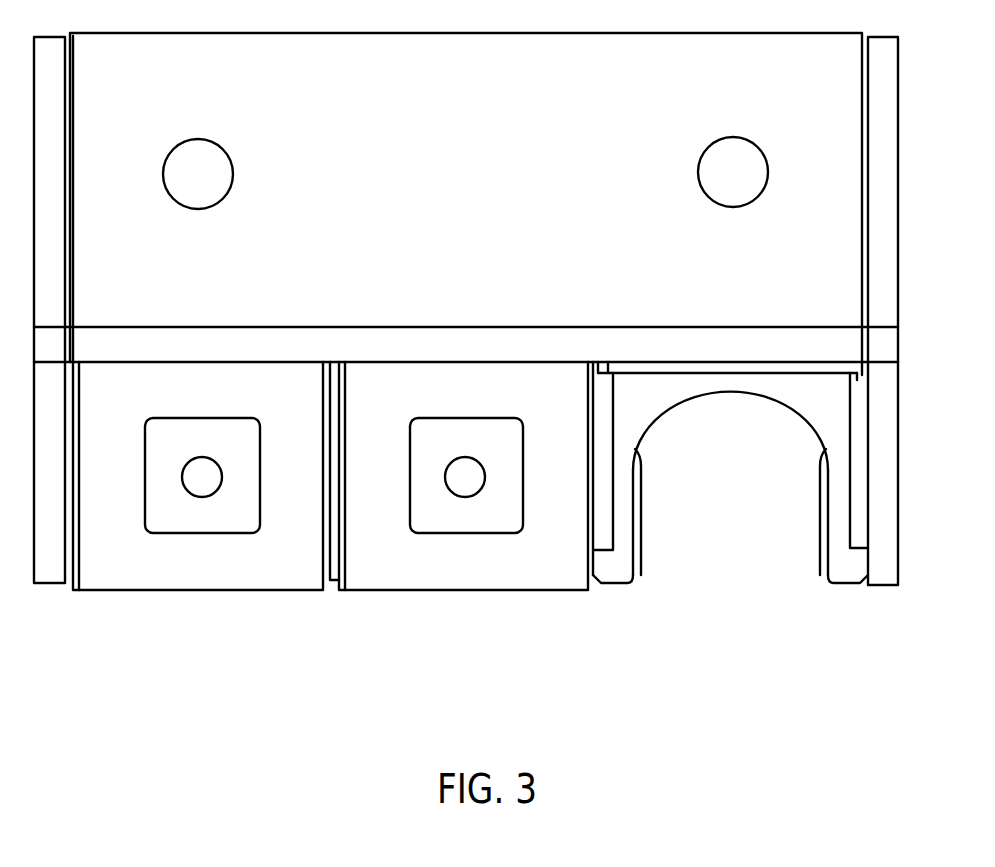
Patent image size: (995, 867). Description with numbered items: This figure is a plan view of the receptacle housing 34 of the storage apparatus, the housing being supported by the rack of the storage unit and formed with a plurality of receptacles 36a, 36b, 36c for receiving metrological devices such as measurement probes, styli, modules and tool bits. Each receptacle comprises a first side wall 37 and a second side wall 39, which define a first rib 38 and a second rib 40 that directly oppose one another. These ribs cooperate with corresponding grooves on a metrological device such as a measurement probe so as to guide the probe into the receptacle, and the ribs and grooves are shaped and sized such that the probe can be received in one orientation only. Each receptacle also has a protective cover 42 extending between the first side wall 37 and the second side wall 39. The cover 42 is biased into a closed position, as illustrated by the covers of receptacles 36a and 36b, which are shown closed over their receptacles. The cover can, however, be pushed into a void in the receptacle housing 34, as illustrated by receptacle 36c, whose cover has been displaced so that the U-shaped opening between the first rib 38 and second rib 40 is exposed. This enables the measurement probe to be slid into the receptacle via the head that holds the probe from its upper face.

The receptacle housing 34 is at (900, 200).
The receptacle 36a is at (185, 611).
The receptacle 36b is at (453, 611).
The receptacle 36c is at (734, 527).
The first side wall 37 is at (612, 575).
The first rib 38 is at (638, 563).
The second side wall 39 is at (837, 563).
The second rib 40 is at (825, 567).
The protective cover 42 is at (130, 565).